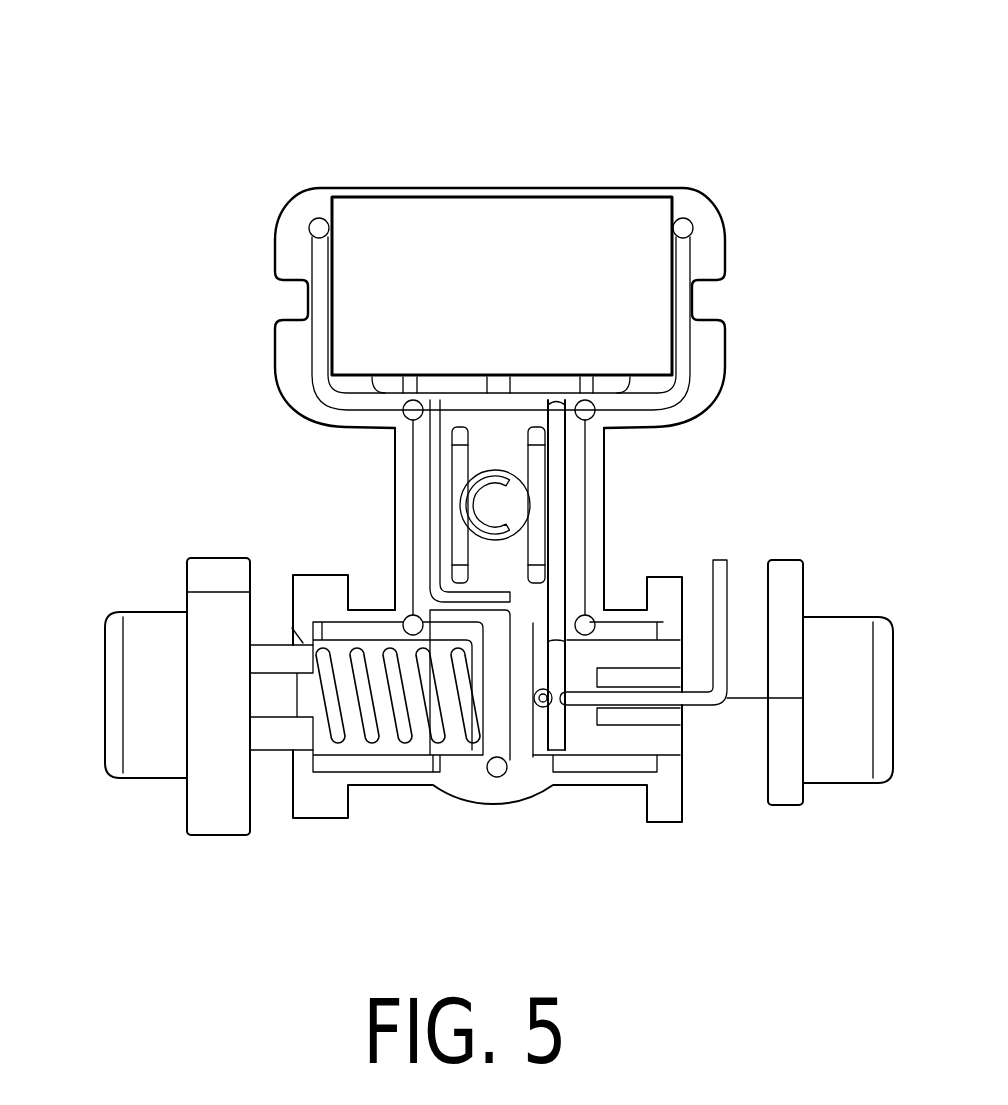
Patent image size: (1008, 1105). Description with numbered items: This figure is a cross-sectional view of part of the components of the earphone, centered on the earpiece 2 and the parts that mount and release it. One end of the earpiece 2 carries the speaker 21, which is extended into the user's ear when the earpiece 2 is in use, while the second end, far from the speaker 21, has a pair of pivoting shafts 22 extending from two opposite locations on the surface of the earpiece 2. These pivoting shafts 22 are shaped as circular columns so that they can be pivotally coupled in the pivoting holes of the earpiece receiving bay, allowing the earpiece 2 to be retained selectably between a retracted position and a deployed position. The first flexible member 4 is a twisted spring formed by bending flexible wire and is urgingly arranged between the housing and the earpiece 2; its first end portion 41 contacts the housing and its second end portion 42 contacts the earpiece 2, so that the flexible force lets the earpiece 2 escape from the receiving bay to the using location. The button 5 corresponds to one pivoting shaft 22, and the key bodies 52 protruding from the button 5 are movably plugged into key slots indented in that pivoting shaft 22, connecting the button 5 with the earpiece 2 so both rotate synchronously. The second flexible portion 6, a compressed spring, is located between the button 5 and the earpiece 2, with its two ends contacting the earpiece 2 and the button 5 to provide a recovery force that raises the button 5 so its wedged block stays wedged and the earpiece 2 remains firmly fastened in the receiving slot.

The earpiece 2 is at (520, 170).
The speaker 21 is at (627, 230).
The pivoting shafts 22 is at (383, 786).
The first flexible member 4 is at (578, 486).
The first end portion 41 is at (727, 607).
The second end portion 42 is at (440, 490).
The button 5 is at (128, 585).
The key bodies 52 is at (273, 700).
The second flexible portion 6 is at (410, 745).